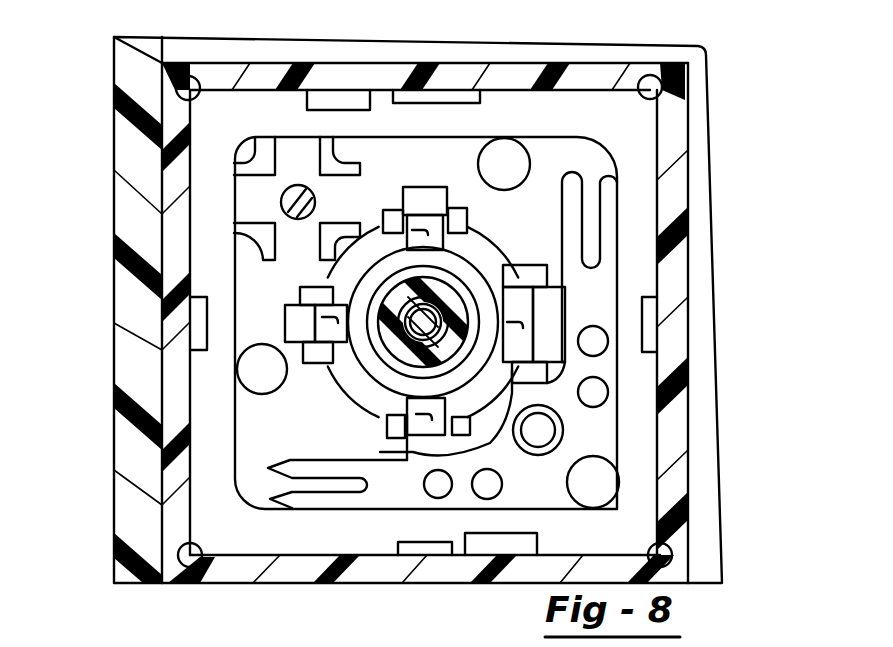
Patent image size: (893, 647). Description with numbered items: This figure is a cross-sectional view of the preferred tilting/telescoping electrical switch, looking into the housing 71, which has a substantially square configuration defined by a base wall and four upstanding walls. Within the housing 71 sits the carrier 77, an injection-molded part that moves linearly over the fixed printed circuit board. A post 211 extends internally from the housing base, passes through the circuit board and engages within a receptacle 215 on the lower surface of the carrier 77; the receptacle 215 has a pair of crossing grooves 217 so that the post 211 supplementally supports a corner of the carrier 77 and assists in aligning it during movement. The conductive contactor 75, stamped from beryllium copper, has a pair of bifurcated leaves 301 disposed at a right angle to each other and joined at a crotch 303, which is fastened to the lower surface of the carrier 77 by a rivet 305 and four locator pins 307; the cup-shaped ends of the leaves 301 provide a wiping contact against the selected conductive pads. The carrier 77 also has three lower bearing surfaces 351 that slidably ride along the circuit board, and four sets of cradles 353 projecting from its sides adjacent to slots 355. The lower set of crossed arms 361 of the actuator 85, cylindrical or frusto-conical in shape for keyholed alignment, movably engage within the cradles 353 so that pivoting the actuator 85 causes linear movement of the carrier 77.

The housing 71 is at (672, 140).
The conductive contactor 75 is at (600, 443).
The carrier 77 is at (380, 153).
The actuator 85 is at (353, 287).
The post 211 is at (297, 183).
The receptacle 215 is at (255, 163).
The crossing grooves 217 is at (305, 153).
The bifurcated leaves 301 is at (593, 278).
The crotch 303 is at (543, 490).
The rivet 305 is at (563, 433).
The locator pins 307 is at (593, 392).
The lower bearing surfaces 351 is at (508, 150).
The cradles 353 is at (457, 205).
The slots 355 is at (470, 237).
The lower set of crossed arms 361 is at (402, 235).